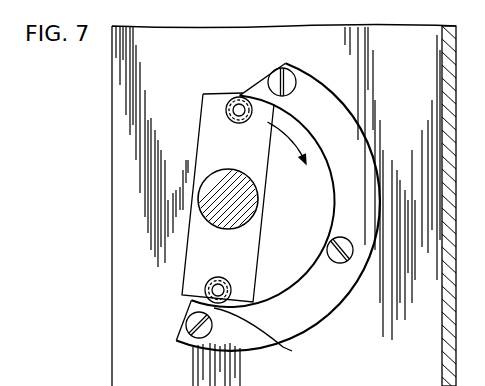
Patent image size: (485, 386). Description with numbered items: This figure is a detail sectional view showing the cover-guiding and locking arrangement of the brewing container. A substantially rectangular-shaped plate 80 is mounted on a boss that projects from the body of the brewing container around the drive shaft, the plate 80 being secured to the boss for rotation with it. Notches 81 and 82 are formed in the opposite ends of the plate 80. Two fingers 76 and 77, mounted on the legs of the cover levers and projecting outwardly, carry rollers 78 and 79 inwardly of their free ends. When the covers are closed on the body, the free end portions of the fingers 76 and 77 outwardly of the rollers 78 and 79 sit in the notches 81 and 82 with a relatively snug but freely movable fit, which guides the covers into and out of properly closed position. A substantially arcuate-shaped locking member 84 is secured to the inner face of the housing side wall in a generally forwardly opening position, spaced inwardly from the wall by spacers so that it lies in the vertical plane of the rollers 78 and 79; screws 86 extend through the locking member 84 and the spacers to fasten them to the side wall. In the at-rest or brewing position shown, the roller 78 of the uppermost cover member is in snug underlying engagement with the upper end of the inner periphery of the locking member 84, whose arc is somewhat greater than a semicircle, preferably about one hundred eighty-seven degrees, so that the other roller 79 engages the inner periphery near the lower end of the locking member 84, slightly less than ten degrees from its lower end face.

The finger 76 is at (236, 97).
The finger 77 is at (192, 304).
The roller 78 is at (243, 90).
The roller 79 is at (262, 336).
The plate 80 is at (212, 155).
The notch 81 is at (228, 112).
The notch 82 is at (205, 290).
The locking member 84 is at (356, 153).
The screws 86 is at (292, 83).